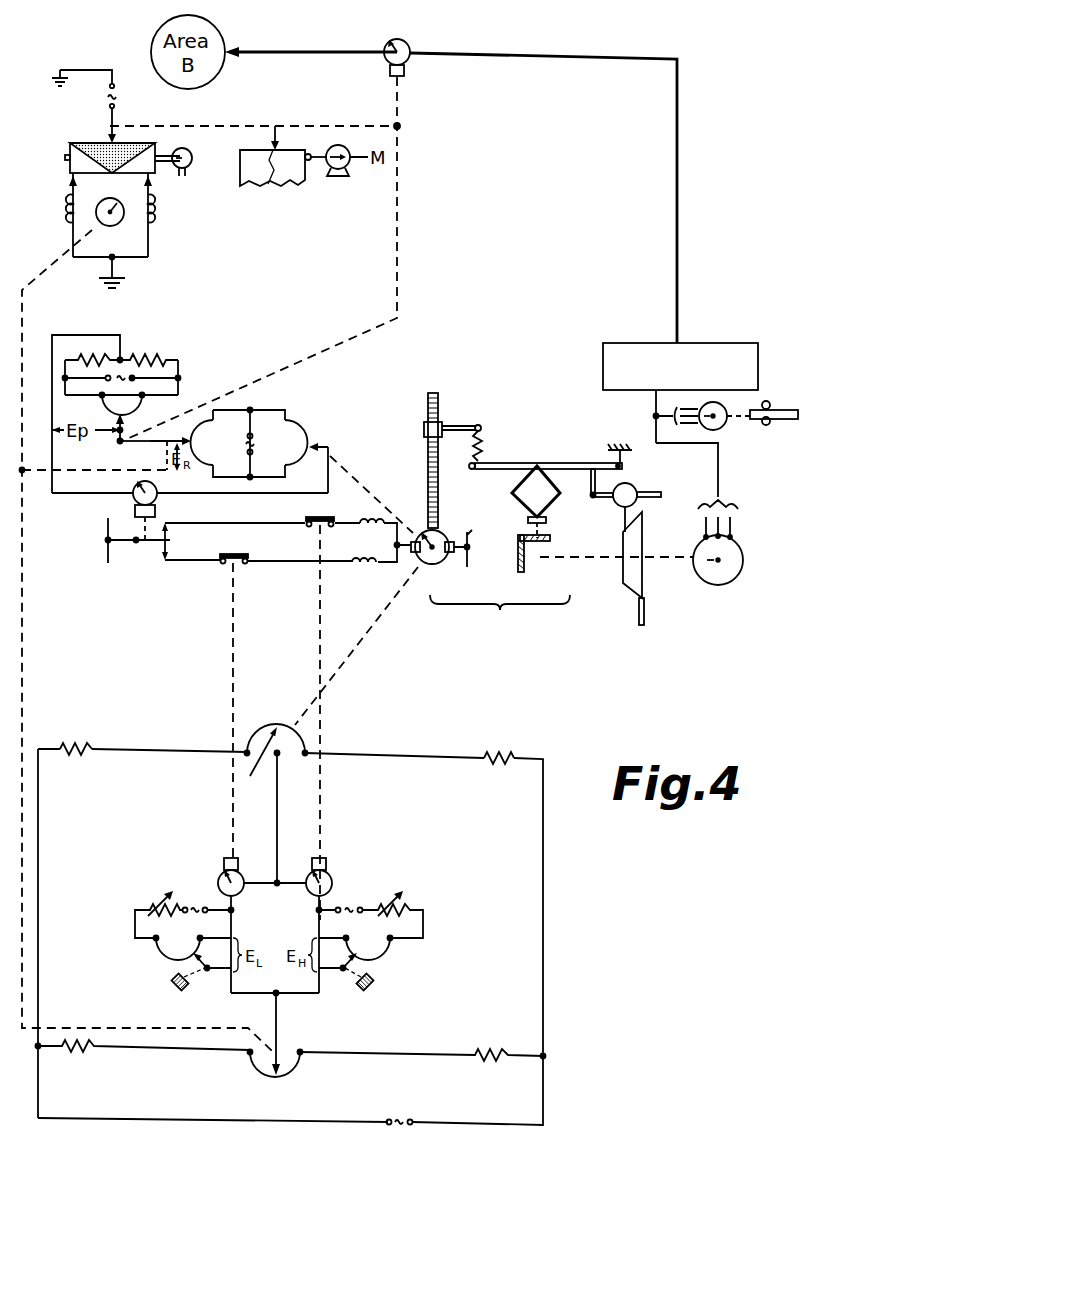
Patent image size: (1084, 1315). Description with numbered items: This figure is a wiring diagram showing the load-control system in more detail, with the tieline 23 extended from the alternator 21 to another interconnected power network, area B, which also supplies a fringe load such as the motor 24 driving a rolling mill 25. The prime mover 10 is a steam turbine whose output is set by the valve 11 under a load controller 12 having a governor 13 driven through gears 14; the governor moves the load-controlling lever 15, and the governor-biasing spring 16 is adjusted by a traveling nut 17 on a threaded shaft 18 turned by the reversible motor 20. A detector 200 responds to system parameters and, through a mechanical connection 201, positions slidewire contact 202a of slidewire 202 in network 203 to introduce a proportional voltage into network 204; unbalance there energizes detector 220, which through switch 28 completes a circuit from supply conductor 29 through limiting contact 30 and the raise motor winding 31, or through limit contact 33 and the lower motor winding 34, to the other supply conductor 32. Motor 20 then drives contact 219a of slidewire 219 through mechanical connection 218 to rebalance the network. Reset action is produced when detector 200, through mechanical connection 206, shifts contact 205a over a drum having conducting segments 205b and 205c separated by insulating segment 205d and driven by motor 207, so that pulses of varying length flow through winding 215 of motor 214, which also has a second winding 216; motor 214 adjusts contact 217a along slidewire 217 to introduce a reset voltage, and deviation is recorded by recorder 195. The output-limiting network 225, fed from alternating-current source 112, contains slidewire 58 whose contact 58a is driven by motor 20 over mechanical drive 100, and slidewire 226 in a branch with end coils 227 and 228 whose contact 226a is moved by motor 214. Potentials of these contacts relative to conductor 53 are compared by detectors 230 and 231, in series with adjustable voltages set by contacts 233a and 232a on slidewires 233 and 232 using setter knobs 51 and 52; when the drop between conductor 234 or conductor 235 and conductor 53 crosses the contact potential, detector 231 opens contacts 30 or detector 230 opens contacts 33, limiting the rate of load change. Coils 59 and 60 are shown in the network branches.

The prime mover 10 is at (641, 528).
The valve 11 is at (636, 487).
The load controller 12 is at (498, 634).
The governor 13 is at (553, 504).
The gears 14 is at (528, 553).
The load-controlling lever 15 is at (556, 462).
The governor-biasing spring 16 is at (483, 451).
The traveling nut 17 is at (424, 424).
The threaded shaft 18 is at (428, 479).
The reversible motor 20 is at (438, 559).
The alternator 21 is at (743, 553).
The transmission line 23 is at (547, 57).
The motor 24 is at (727, 427).
The rolling mill 25 is at (800, 390).
The switch 28 is at (160, 548).
The supply conductor 29 is at (107, 541).
The limiting contact 30 is at (305, 518).
The raise motor winding 31 is at (368, 519).
The supply conductor 32 is at (470, 531).
The limit contact 33 is at (240, 556).
The lower motor winding 34 is at (367, 569).
The setter knob 51 is at (175, 982).
The setter knob 52 is at (371, 984).
The conductor 53 is at (40, 879).
The slidewire 58 is at (264, 729).
The slidewire contact 58a is at (257, 805).
The resistor 59 is at (78, 745).
The resistor 60 is at (495, 752).
The mechanical drive 100 is at (364, 642).
The alternating-current source 112 is at (398, 1130).
The recorder 195 is at (300, 216).
The detector 200 is at (409, 45).
The mechanical connection 201 is at (399, 103).
The slidewire 202 is at (107, 401).
The slidewire contact 202a is at (105, 447).
The network 203 is at (123, 374).
The network 204 is at (324, 493).
The contact 205a is at (107, 128).
The conducting segment 205b is at (49, 213).
The conducting segment 205c is at (148, 172).
The insulating segment 205d is at (128, 146).
The mechanical connection 206 is at (243, 125).
The motor 207 is at (190, 155).
The motor 214 is at (104, 199).
The winding 215 is at (153, 218).
The coil 216 is at (68, 218).
The winding 217 is at (213, 442).
The contact 217a is at (176, 430).
The mechanical connection 218 is at (358, 480).
The slidewire 219 is at (289, 430).
The contact 219a is at (313, 446).
The detector 220 is at (158, 497).
The output-limiting network 225 is at (483, 832).
The slidewire 226 is at (292, 1068).
The slidewire contact 226a is at (281, 1055).
The end coil 227 is at (79, 1056).
The end coil 228 is at (492, 1064).
The detector 230 is at (224, 864).
The detector 231 is at (328, 865).
The slidewire 232 is at (396, 955).
The adjustable contact 232a is at (347, 972).
The slidewire 233 is at (163, 956).
The adjustable contact 233a is at (199, 972).
The conductor 234 is at (322, 903).
The conductor 235 is at (233, 907).